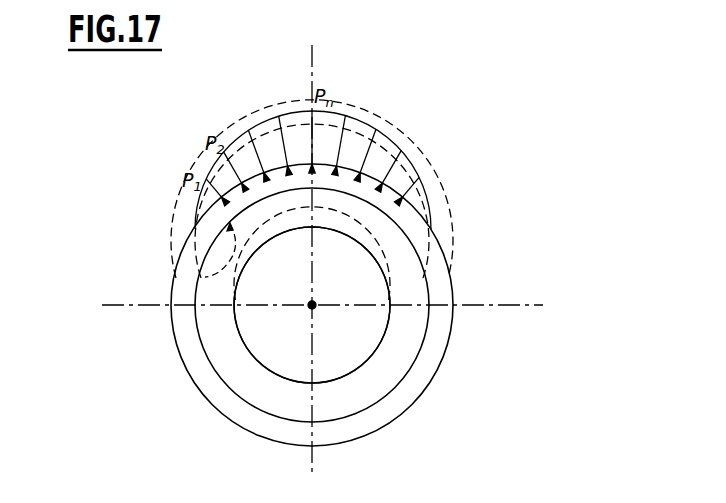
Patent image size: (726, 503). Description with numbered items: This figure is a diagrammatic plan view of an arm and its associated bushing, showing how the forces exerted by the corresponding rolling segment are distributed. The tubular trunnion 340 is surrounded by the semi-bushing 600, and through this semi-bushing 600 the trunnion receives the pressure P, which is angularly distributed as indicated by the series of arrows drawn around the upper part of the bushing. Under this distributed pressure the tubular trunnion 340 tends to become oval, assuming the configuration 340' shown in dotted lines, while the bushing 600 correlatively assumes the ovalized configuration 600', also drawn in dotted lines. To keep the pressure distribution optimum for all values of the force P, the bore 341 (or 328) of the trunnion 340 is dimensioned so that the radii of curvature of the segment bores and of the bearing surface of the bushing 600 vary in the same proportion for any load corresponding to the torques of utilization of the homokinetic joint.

The semi-bushing 600 is at (347, 305).
The ovalized configuration of the bushing 600' is at (339, 189).
The tubular trunnion 340 is at (365, 305).
The ovalized configuration of the trunnion 340' is at (267, 201).
The bore of the trunnion 341 is at (346, 366).
The bore of the trunnion 328 is at (409, 305).